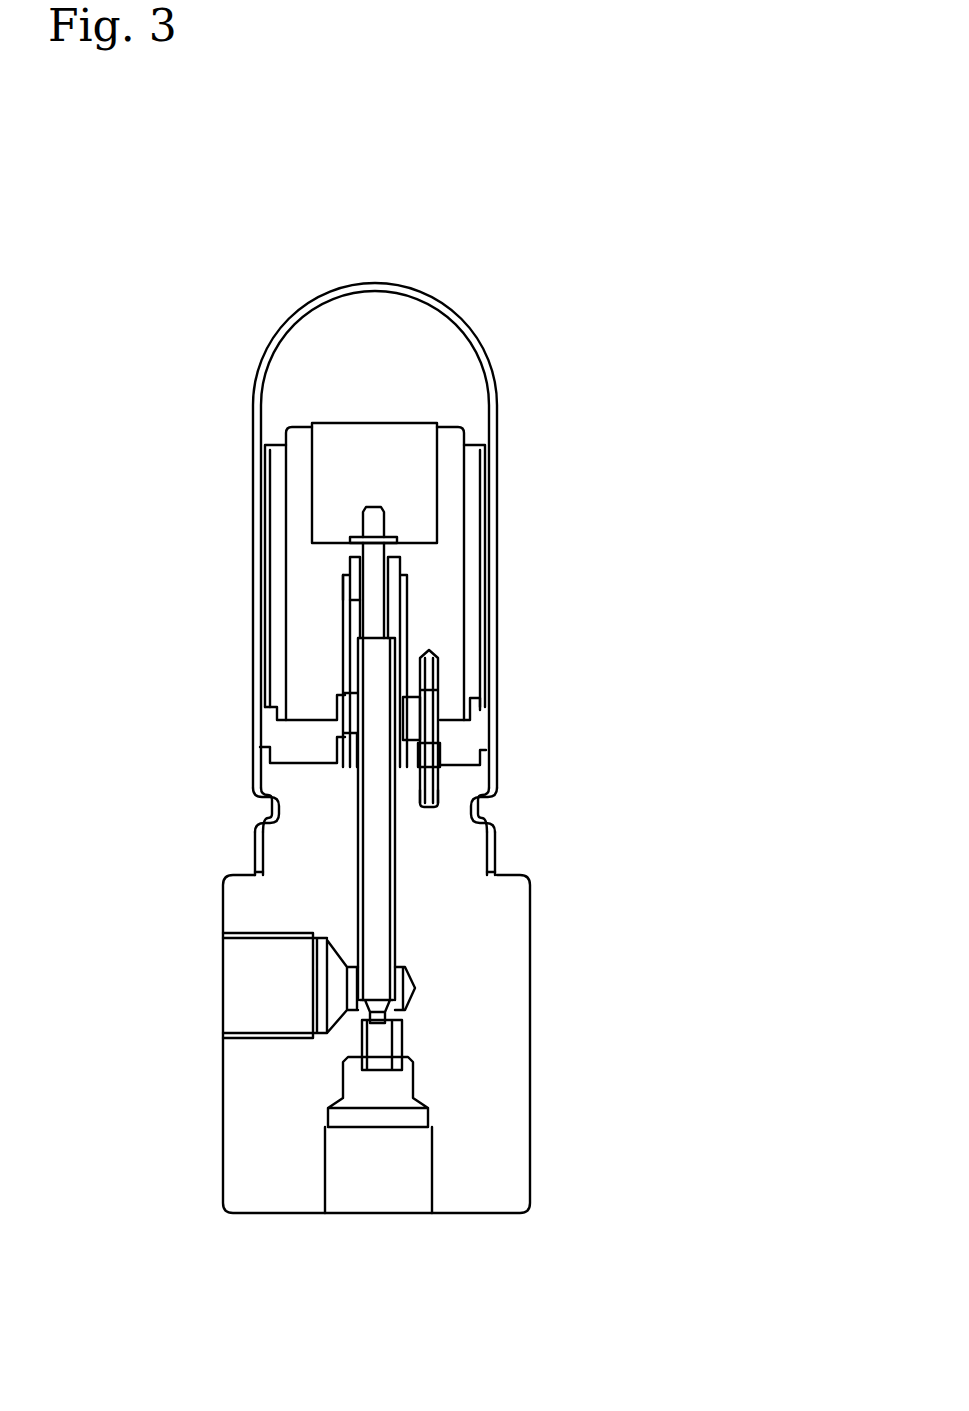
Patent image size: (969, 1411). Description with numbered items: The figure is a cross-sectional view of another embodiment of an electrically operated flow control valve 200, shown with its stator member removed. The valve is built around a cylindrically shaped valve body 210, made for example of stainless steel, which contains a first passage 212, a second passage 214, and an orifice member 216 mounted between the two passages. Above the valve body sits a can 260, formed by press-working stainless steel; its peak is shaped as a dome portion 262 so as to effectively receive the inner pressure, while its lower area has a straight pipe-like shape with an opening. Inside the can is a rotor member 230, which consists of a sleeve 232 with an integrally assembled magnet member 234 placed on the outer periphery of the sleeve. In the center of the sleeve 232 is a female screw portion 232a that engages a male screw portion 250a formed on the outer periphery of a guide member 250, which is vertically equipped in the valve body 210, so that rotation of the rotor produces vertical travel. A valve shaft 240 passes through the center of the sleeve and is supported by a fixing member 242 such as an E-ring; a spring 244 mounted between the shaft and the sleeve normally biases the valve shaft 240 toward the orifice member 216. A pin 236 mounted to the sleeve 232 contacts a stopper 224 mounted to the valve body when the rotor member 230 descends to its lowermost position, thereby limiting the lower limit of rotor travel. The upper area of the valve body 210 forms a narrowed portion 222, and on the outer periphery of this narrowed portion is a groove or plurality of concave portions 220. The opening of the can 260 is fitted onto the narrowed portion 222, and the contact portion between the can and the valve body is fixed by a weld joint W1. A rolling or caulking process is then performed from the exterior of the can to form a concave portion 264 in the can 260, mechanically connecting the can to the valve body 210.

The electrically operated flow control valve 200 is at (626, 533).
The valve body 210 is at (490, 1190).
The first passage 212 is at (252, 982).
The second passage 214 is at (368, 1190).
The orifice member 216 is at (360, 1055).
The concave portions 220 is at (490, 830).
The narrowed portion 222 is at (267, 762).
The stopper 224 is at (437, 810).
The rotor member 230 is at (326, 323).
The sleeve 232 is at (300, 437).
The female screw portion 232a is at (355, 622).
The magnet member 234 is at (273, 462).
The pin 236 is at (432, 712).
The valve shaft 240 is at (378, 892).
The fixing member 242 is at (355, 533).
The spring 244 is at (395, 600).
The guide member 250 is at (350, 682).
The male screw portion 250a is at (400, 625).
The can 260 is at (487, 358).
The dome portion 262 is at (392, 283).
The concave portion 264 is at (487, 813).
The weld joint W1 is at (497, 872).